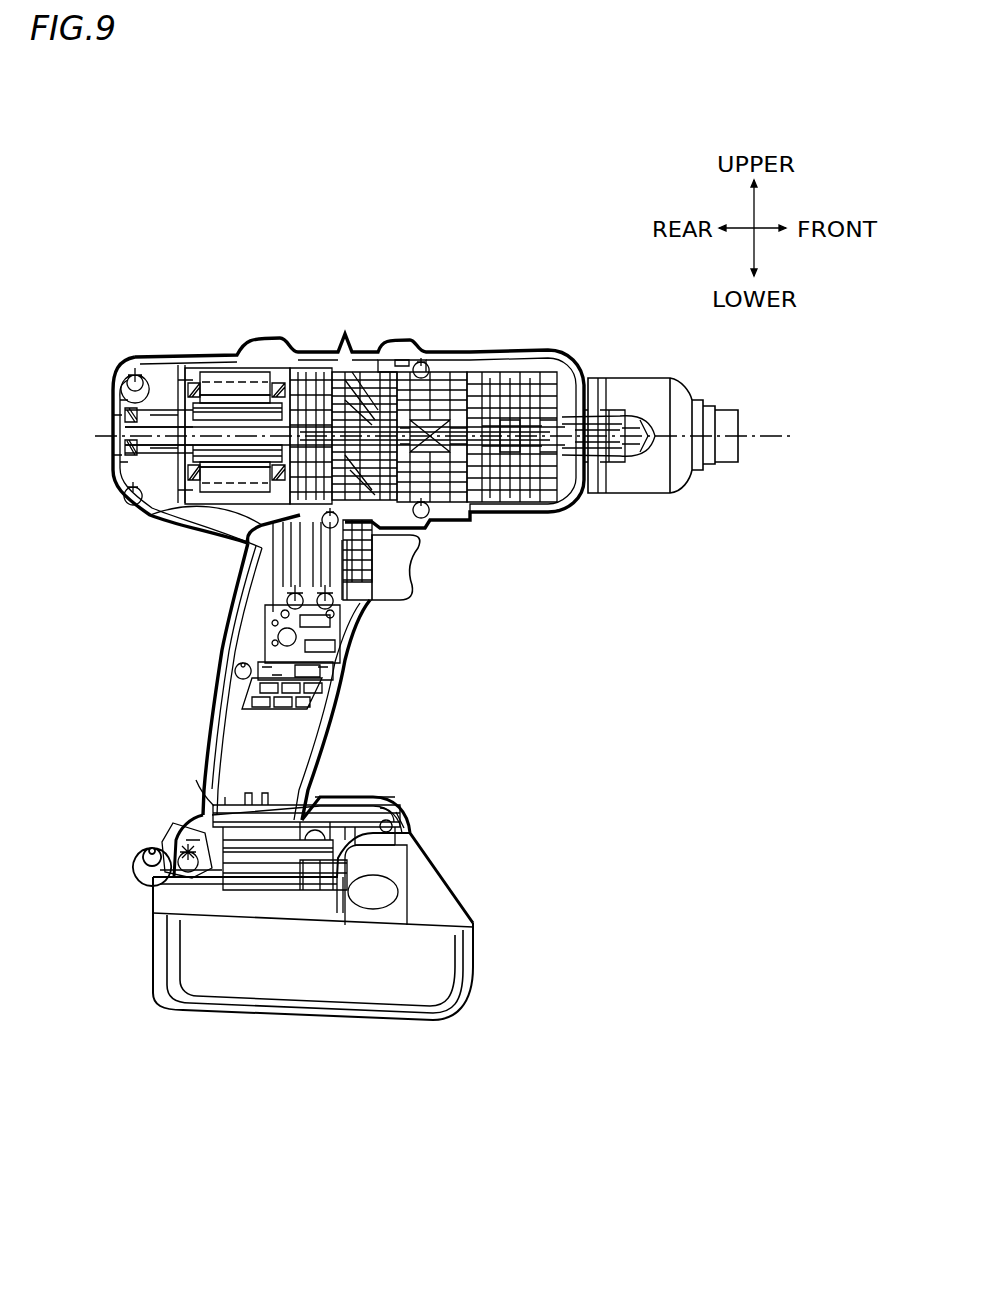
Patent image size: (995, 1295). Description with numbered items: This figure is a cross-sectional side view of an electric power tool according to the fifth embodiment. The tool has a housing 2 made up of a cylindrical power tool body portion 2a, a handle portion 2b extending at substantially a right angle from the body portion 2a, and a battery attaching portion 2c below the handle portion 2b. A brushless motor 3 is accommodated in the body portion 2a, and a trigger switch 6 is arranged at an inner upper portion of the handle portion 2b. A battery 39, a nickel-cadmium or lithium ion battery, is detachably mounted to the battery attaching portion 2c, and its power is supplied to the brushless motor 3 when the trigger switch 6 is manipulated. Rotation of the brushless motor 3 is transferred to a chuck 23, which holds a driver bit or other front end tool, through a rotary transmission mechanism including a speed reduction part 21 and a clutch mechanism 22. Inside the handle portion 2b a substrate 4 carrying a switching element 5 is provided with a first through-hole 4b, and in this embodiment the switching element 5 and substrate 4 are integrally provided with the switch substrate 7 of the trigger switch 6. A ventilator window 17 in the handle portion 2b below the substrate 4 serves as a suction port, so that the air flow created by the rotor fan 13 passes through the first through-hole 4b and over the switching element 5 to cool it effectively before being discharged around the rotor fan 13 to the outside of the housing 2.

The housing 2 is at (320, 594).
The power tool body portion 2a is at (195, 350).
The handle portion 2b is at (205, 705).
The battery attaching portion 2c is at (408, 820).
The brushless motor 3 is at (228, 365).
The rotor fan 13 is at (303, 352).
The speed reduction part 21 is at (392, 340).
The clutch mechanism 22 is at (455, 358).
The chuck 23 is at (603, 410).
The trigger switch 6 is at (400, 560).
The switch substrate 7 is at (342, 659).
The switching element 5 is at (340, 685).
The first through-hole 4b is at (330, 704).
The substrate 4 is at (285, 714).
The ventilator window 17 is at (200, 780).
The battery 39 is at (420, 1030).